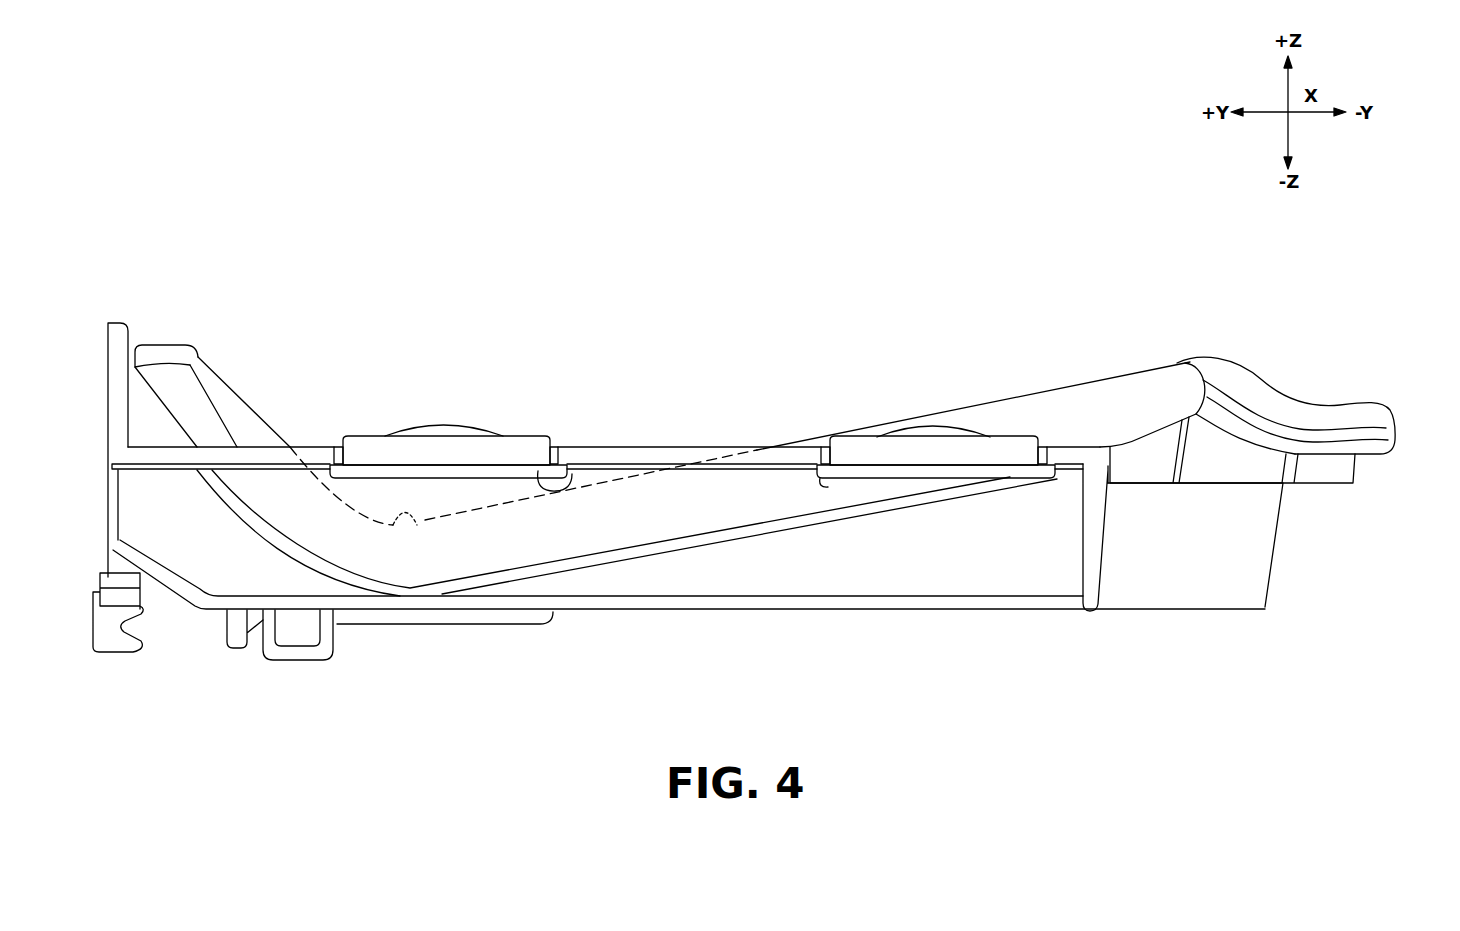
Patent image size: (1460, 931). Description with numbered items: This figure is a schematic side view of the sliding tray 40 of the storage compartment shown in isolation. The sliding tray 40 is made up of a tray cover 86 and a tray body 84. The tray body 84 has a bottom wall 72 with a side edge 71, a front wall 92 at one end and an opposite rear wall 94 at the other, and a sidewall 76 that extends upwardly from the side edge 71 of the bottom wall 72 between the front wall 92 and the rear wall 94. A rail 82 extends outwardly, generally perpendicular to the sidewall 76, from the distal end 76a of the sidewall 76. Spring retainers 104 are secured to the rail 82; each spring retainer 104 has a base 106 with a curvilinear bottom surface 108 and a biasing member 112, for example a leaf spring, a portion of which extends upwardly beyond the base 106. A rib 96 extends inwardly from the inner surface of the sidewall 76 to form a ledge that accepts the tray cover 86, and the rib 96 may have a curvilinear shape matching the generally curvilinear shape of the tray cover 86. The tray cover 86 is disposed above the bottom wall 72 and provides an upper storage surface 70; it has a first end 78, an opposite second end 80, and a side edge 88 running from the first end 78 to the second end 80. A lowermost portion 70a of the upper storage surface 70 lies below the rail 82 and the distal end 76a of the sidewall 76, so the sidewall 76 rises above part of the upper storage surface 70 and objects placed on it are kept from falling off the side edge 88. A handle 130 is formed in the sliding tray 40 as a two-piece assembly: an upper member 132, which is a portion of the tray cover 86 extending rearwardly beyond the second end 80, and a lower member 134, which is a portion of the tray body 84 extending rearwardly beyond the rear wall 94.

The sliding tray 40 is at (176, 203).
The upper storage surface 70 is at (792, 446).
The lowermost portion 70a is at (417, 527).
The side edge 71 is at (925, 609).
The bottom wall 72 is at (725, 611).
The sidewall 76 is at (845, 572).
The distal end 76a is at (634, 447).
The first end 78 is at (166, 345).
The second end 80 is at (1203, 380).
The rail 82 is at (655, 466).
The tray body 84 is at (1057, 619).
The tray cover 86 is at (1126, 361).
The side edge 88 is at (200, 403).
The front wall 92 is at (107, 392).
The rear wall 94 is at (1102, 570).
The rib 96 is at (632, 559).
The spring retainer 104 is at (424, 421).
The base 106 is at (375, 435).
The bottom surface 108 is at (576, 467).
The biasing member 112 is at (470, 428).
The handle 130 is at (1388, 397).
The upper member 132 is at (1380, 423).
The lower member 134 is at (1340, 472).